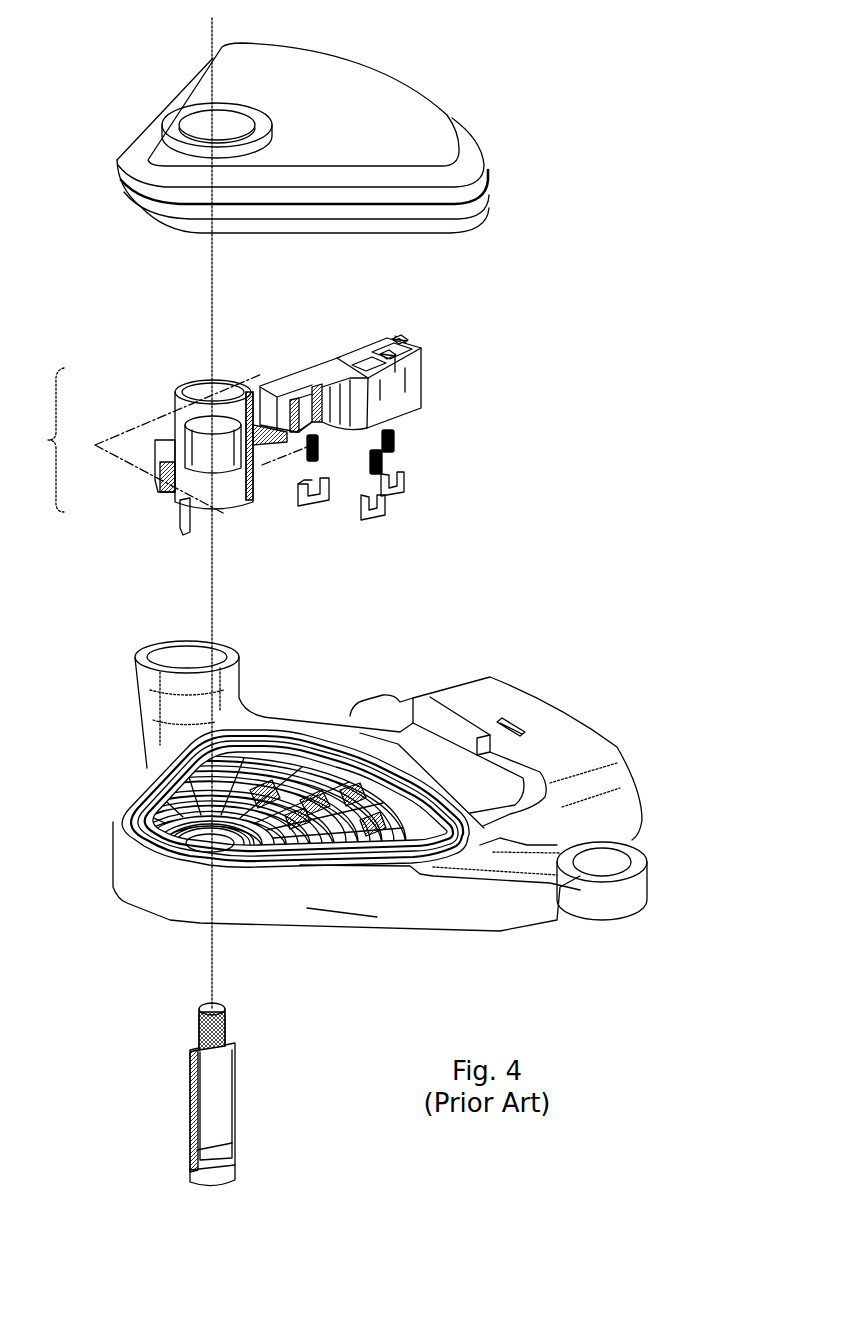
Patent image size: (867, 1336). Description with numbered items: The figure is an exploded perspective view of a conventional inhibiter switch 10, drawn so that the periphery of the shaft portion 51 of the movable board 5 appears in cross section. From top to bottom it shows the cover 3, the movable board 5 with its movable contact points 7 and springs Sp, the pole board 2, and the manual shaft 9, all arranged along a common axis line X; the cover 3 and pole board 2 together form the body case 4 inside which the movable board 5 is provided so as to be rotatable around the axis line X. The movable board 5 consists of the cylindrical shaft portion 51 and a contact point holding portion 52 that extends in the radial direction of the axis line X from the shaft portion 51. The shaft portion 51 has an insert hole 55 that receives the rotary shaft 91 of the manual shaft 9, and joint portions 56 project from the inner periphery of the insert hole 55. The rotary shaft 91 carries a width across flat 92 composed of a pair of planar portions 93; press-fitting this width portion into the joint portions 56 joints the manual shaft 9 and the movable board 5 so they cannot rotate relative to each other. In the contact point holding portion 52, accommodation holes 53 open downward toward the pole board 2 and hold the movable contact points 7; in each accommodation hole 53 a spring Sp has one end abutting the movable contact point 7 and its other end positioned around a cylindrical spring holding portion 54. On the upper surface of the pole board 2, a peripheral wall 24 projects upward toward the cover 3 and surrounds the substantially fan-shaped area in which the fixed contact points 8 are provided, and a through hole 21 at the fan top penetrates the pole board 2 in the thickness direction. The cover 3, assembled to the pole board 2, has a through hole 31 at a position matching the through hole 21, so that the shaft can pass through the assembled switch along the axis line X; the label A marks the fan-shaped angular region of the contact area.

The inhibiter switch 10 is at (313, 204).
The through hole 31 is at (205, 130).
The cover 3 is at (137, 217).
The body case 4 is at (47, 440).
The pole board 2 is at (330, 728).
The movable board 5 is at (329, 414).
The shaft portion 51 is at (198, 388).
The insert hole 55 is at (221, 418).
The accommodation holes 53 is at (304, 392).
The spring holding portion 54 is at (323, 375).
The contact point holding portion 52 is at (351, 357).
The joint portions 56 is at (233, 470).
The movable contact points 7 is at (321, 508).
The spring Sp is at (321, 448).
The fixed contact points 8 is at (307, 905).
The peripheral wall 24 is at (128, 820).
The through hole 21 is at (192, 850).
The manual shaft 9 is at (245, 1086).
The width across flat 92 is at (190, 1090).
The planar portions 93 is at (217, 1097).
The rotary shaft 91 is at (220, 1162).
The axis line X is at (212, 505).
The angular range A is at (122, 436).